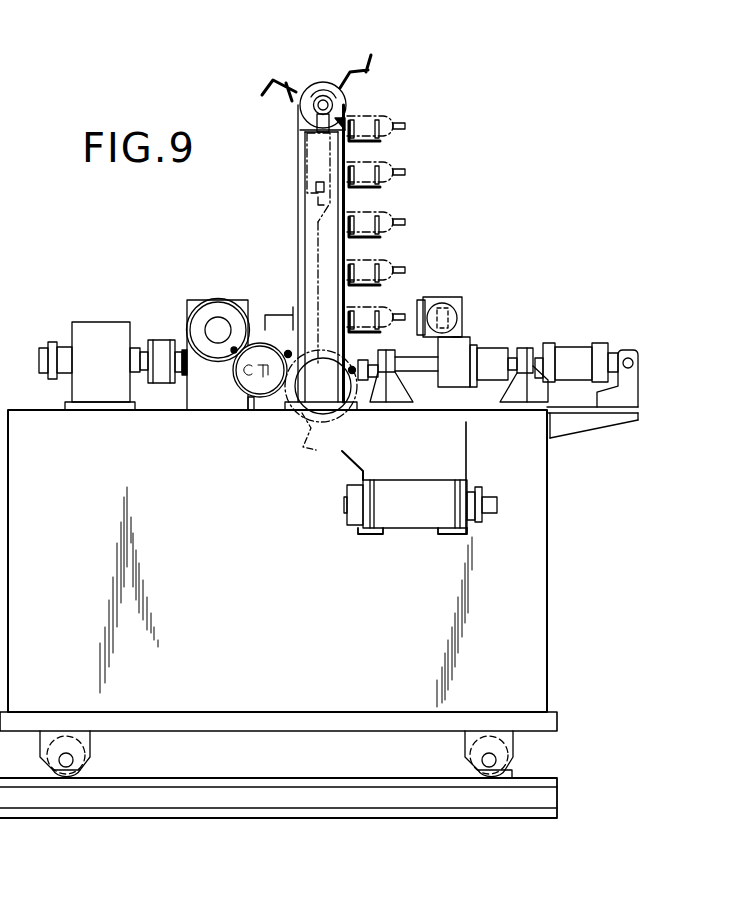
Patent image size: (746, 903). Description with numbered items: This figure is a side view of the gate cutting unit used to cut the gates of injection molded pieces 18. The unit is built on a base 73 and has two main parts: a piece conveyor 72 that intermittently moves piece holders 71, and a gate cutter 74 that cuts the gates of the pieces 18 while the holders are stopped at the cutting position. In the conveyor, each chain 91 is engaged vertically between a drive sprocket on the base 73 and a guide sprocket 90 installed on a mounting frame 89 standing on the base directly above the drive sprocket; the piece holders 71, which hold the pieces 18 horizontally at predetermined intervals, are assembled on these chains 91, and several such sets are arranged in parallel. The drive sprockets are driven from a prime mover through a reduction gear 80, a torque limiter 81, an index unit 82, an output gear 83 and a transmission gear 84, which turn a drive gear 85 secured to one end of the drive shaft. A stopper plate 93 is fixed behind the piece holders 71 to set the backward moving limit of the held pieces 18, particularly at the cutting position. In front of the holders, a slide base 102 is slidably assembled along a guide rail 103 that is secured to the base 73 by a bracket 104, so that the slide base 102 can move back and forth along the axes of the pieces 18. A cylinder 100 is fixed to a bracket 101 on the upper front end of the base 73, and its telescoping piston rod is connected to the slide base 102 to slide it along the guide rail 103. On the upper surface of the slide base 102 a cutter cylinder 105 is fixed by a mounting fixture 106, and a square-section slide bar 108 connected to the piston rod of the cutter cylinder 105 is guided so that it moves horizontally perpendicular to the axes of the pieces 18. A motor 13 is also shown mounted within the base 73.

The motor 13 is at (411, 522).
The piece 18 is at (386, 218).
The piece holder 71 is at (380, 137).
The piece conveyor 72 is at (290, 150).
The base 73 is at (540, 484).
The gate cutter 74 is at (547, 272).
The reduction gear 80 is at (103, 322).
The torque limiter 81 is at (160, 340).
The index unit 82 is at (191, 300).
The output gear 83 is at (218, 317).
The transmission gear 84 is at (262, 396).
The drive gear 85 is at (336, 406).
The mounting frame 89 is at (308, 197).
The guide sprocket 90 is at (322, 82).
The chain 91 is at (350, 113).
The stopper plate 93 is at (318, 258).
The cylinder 100 is at (580, 348).
The bracket 101 is at (636, 394).
The slide base 102 is at (466, 346).
The guide rail 103 is at (425, 370).
The bracket 104 is at (537, 398).
The cutter cylinder 105 is at (455, 320).
The mounting fixture 106 is at (455, 338).
The slide bar 108 is at (453, 302).